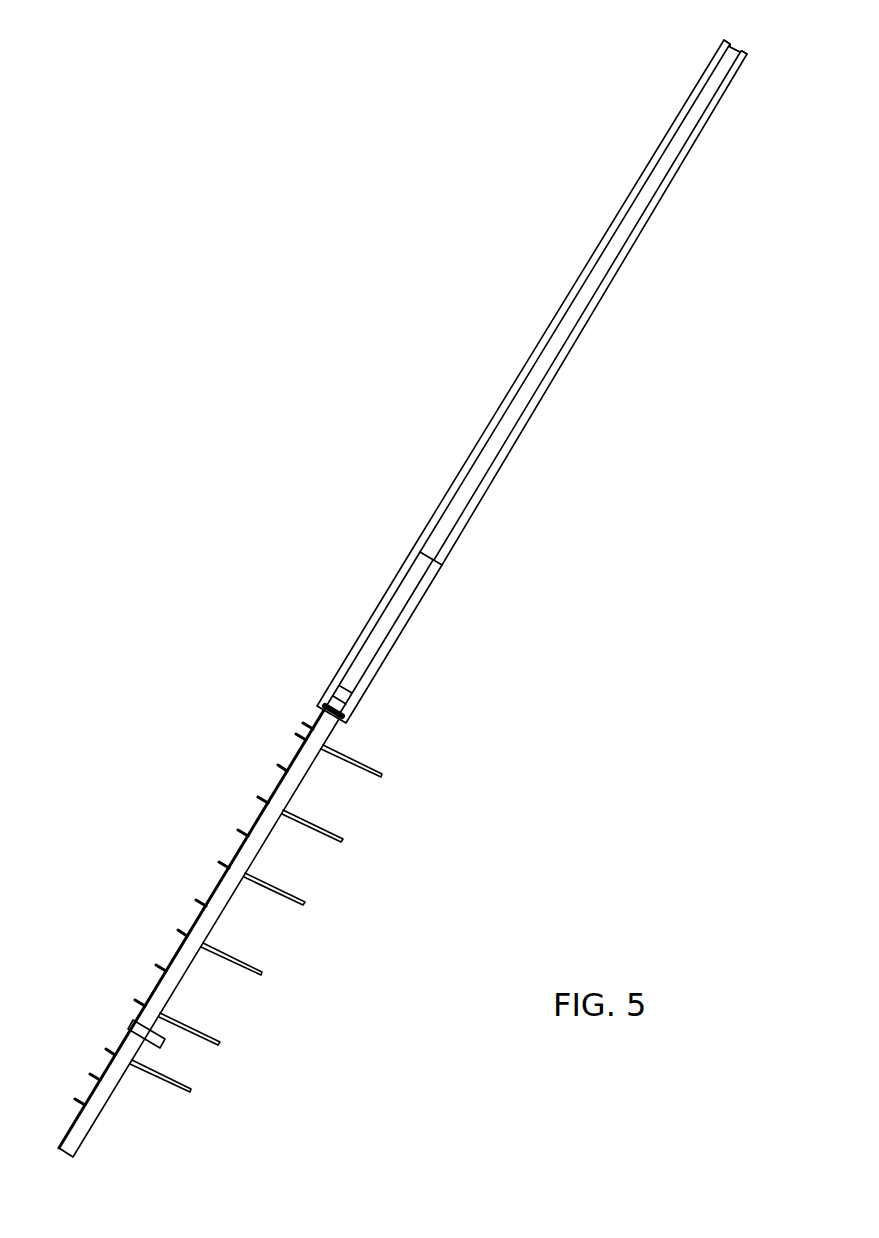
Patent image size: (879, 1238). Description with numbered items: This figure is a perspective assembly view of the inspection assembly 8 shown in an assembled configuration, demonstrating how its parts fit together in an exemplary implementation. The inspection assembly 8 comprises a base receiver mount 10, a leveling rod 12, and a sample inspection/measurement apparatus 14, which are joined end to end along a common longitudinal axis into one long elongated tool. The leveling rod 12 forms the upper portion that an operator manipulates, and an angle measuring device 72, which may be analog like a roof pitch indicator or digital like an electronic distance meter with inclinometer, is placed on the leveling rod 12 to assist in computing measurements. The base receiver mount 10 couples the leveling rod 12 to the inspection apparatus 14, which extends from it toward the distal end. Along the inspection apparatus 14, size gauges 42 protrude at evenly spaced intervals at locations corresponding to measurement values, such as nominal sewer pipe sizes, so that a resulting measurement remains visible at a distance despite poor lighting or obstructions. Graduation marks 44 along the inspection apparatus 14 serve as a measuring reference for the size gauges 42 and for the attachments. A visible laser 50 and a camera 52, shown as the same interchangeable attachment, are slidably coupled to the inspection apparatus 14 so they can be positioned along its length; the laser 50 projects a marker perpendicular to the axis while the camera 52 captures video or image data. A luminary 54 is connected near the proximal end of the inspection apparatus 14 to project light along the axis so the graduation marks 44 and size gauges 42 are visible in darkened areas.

The inspection assembly 8 is at (376, 295).
The base receiver mount 10 is at (405, 608).
The leveling rod 12 is at (615, 284).
The inspection apparatus 14 is at (216, 933).
The size gauges 42 is at (385, 777).
The graduation marks 44 is at (88, 1097).
The visible laser 50 is at (111, 994).
The camera 52 is at (140, 1022).
The luminary 54 is at (322, 712).
The angle measuring device 72 is at (736, 48).